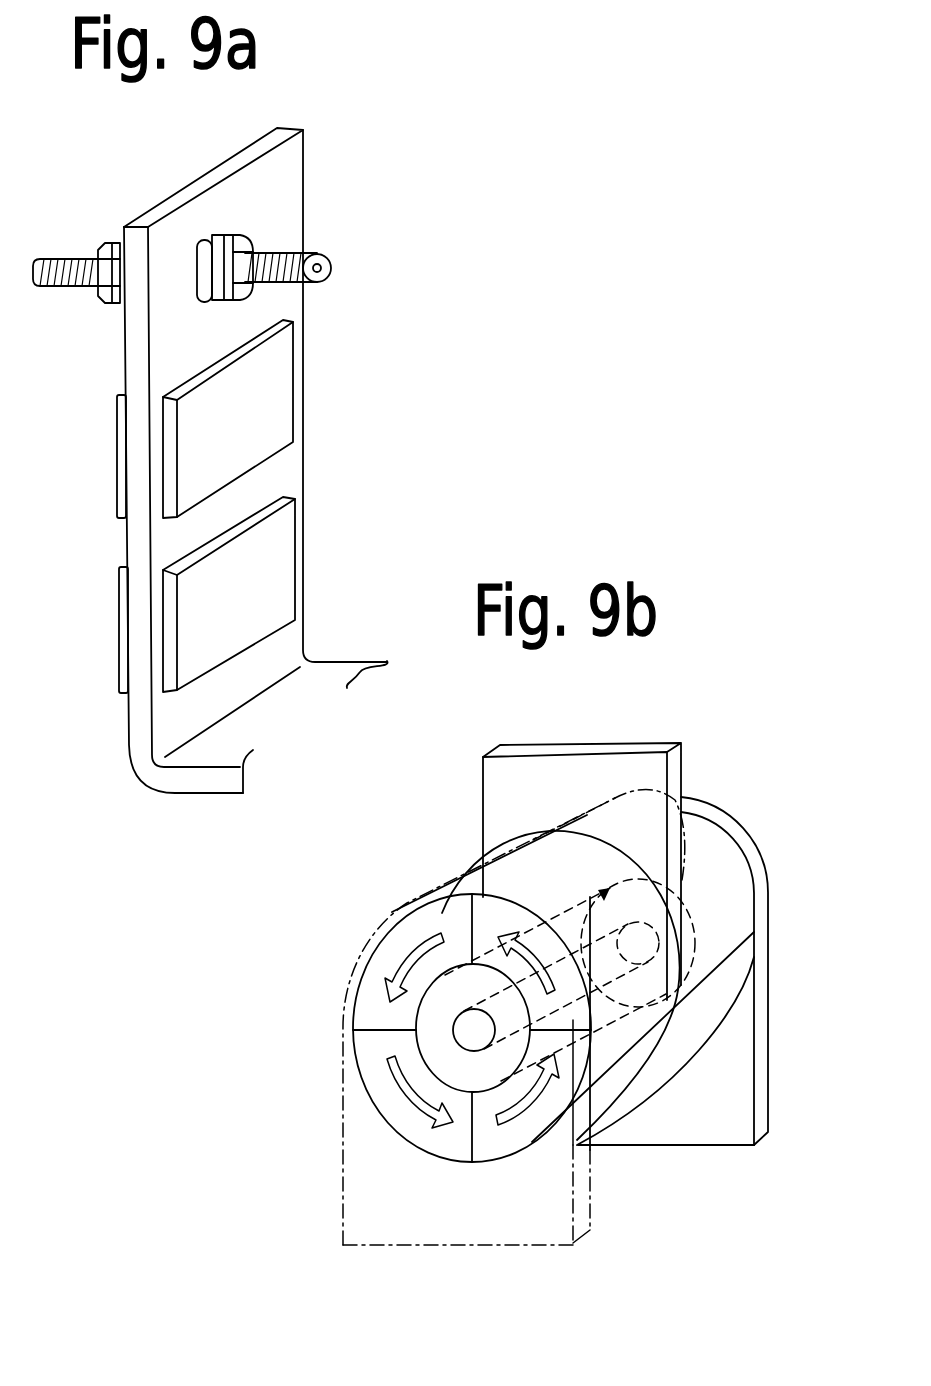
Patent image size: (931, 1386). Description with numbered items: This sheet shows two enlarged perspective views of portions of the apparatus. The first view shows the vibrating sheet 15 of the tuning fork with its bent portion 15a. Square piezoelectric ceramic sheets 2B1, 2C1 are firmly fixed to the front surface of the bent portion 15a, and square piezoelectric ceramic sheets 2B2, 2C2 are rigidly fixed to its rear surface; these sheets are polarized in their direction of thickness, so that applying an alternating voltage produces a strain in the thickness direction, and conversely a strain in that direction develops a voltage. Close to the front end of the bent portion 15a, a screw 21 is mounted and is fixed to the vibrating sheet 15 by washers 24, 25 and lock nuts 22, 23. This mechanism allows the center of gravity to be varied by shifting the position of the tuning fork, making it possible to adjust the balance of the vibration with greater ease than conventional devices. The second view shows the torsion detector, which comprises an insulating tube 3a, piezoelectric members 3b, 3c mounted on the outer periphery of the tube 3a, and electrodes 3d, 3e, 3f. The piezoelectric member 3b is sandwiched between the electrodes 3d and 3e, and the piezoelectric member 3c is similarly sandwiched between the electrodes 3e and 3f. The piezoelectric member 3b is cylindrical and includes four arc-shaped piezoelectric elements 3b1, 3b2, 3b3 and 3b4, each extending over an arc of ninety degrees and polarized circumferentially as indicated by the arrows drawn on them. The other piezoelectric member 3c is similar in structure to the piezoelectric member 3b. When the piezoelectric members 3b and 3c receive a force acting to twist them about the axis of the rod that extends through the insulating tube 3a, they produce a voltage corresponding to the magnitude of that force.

In FIG. 9A, the vibrating sheet 15 is at (137, 749).
In FIG. 9A, the bent portion 15a is at (260, 485).
In FIG. 9A, the square piezoelectric ceramic sheet 2C1 is at (270, 398).
In FIG. 9A, the square piezoelectric ceramic sheet 2B1 is at (278, 590).
In FIG. 9A, the square piezoelectric ceramic sheet 2C2 is at (120, 475).
In FIG. 9A, the square piezoelectric ceramic sheet 2B2 is at (121, 638).
In FIG. 9A, the screw 21 is at (325, 248).
In FIG. 9A, the lock nut 22 is at (108, 240).
In FIG. 9A, the lock nut 23 is at (253, 237).
In FIG. 9A, the washer 24 is at (103, 282).
In FIG. 9A, the washer 25 is at (200, 287).
In FIG. 9B, the insulating tube 3a is at (430, 1017).
In FIG. 9B, the piezoelectric member 3b is at (390, 1130).
In FIG. 9B, the arc-shaped piezoelectric element 3b1 is at (433, 917).
In FIG. 9B, the arc-shaped piezoelectric element 3b2 is at (370, 1072).
In FIG. 9B, the arc-shaped piezoelectric element 3b3 is at (503, 1137).
In FIG. 9B, the arc-shaped piezoelectric element 3b4 is at (498, 908).
In FIG. 9B, the piezoelectric member 3c is at (703, 871).
In FIG. 9B, the electrode 3d is at (583, 1217).
In FIG. 9B, the electrode 3e is at (648, 748).
In FIG. 9B, the electrode 3f is at (728, 1122).